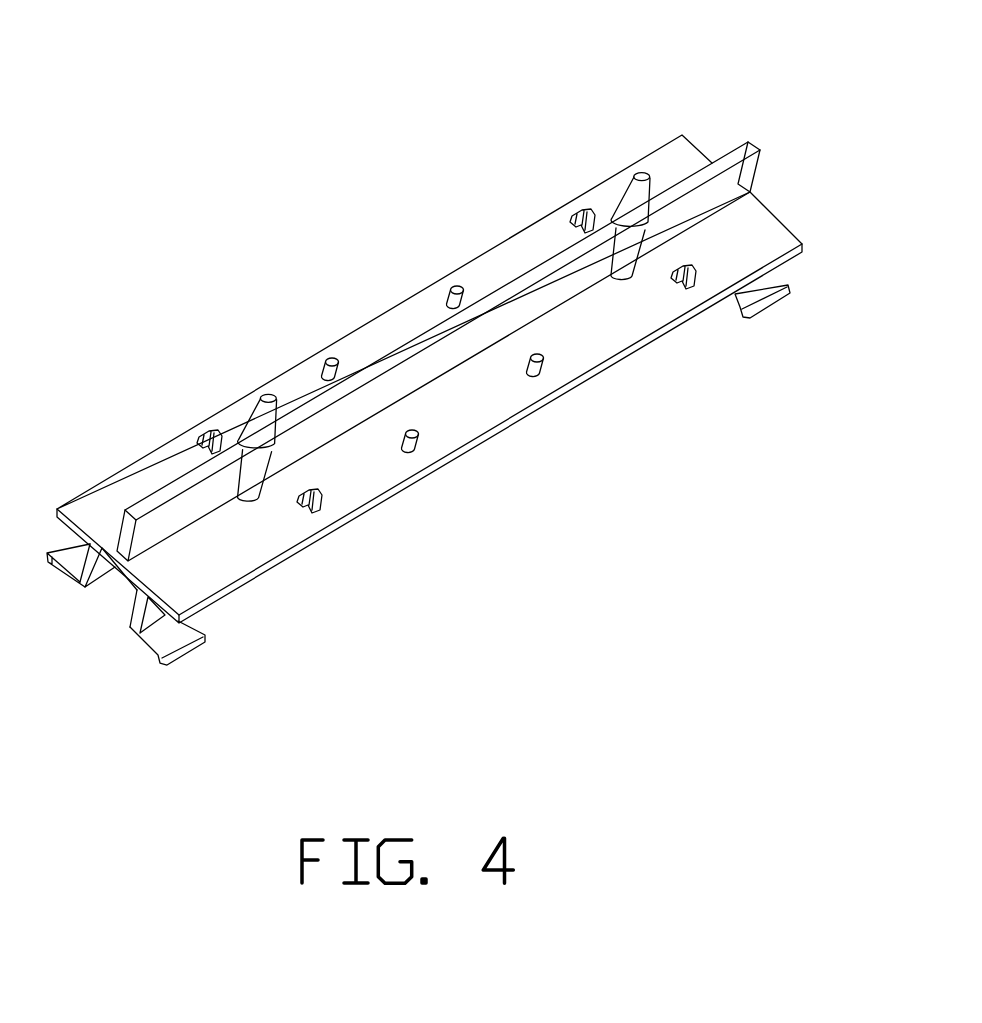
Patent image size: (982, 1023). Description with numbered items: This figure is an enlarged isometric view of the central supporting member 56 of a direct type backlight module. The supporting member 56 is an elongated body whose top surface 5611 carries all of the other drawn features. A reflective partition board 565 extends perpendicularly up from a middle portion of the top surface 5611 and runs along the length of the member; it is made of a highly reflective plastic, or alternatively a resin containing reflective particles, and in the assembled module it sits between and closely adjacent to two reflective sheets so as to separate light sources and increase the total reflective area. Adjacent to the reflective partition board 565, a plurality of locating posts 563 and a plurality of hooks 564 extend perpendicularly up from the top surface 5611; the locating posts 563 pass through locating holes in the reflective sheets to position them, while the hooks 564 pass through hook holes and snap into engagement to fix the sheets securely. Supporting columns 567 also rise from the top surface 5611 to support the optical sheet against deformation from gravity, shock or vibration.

The supporting member 56 is at (476, 343).
The top surface 5611 is at (598, 335).
The reflective partition board 565 is at (757, 146).
The supporting column 567 is at (641, 172).
The locating post 563 is at (418, 447).
The hook 564 is at (322, 514).